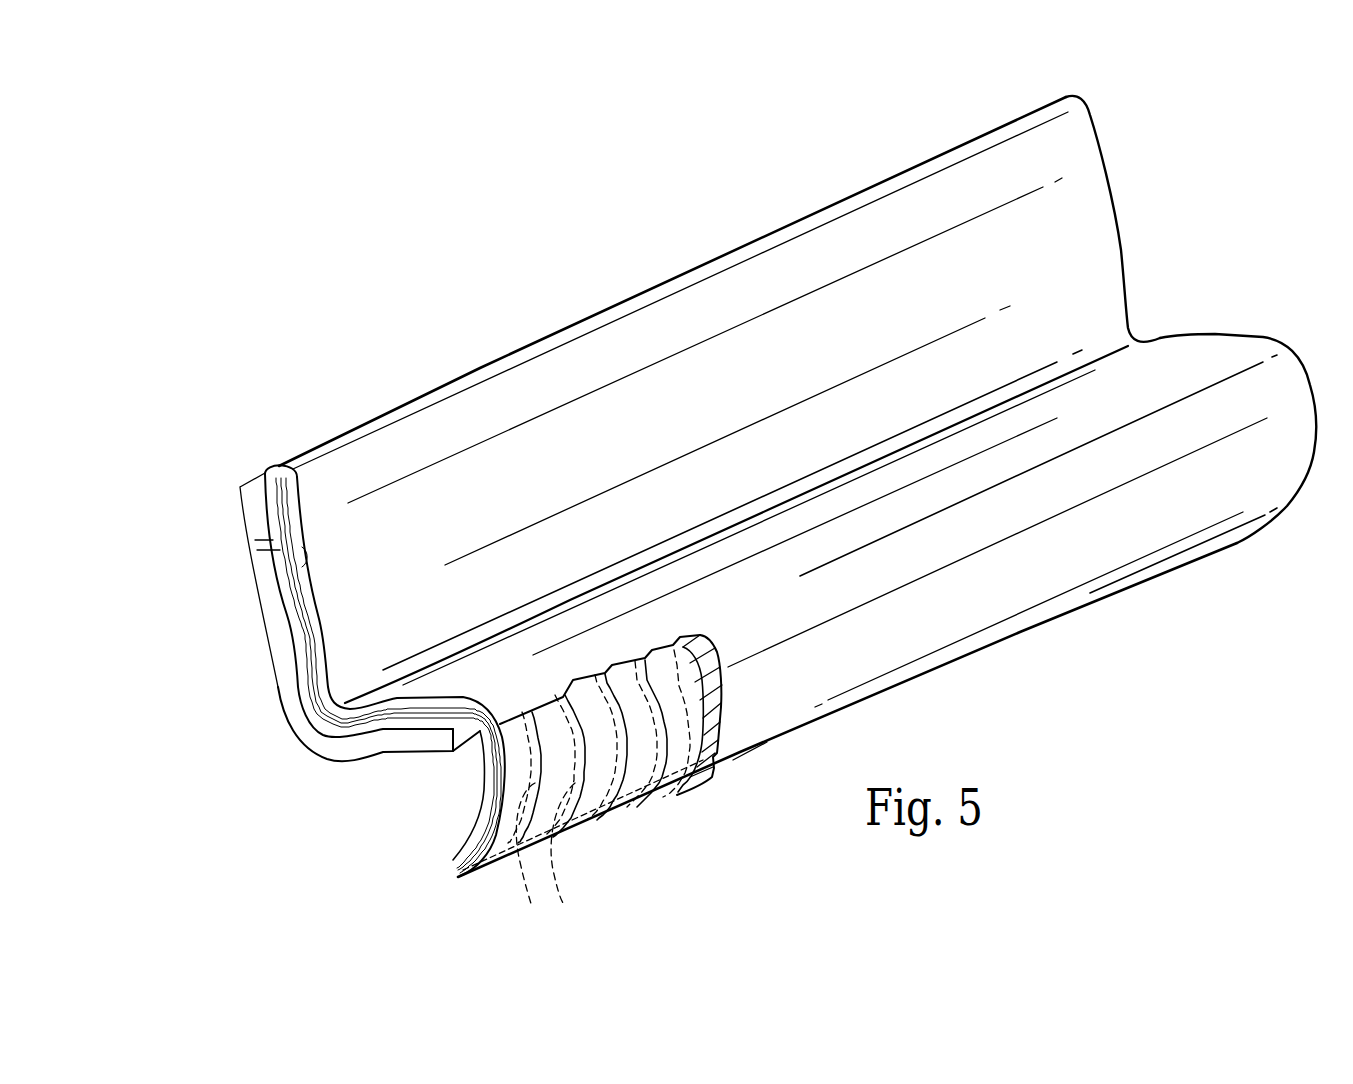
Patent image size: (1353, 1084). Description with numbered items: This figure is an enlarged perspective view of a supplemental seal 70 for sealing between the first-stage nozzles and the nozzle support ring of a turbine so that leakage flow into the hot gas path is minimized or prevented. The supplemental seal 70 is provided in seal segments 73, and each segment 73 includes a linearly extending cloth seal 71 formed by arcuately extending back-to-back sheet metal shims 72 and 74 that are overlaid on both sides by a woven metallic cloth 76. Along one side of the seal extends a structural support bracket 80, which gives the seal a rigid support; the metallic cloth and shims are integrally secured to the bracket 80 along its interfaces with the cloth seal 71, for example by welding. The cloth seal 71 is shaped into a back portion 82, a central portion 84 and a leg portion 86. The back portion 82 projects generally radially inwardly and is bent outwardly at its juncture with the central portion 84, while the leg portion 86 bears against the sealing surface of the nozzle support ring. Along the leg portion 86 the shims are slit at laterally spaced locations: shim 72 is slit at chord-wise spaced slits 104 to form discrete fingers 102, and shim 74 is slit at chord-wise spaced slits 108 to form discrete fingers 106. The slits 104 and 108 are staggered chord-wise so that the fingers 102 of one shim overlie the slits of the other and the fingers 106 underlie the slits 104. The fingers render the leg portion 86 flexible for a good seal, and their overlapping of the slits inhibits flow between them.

The supplemental seal 70 is at (397, 296).
The cloth seal 71 is at (320, 440).
The sheet metal shim 72 is at (303, 567).
The seal segment 73 is at (965, 145).
The sheet metal shim 74 is at (302, 618).
The woven metallic cloth 76 is at (617, 430).
The structural support bracket 80 is at (290, 700).
The back portion 82 is at (277, 510).
The central portion 84 is at (398, 702).
The leg portion 86 is at (875, 658).
The fingers 102 is at (563, 783).
The slits 104 is at (587, 753).
The fingers 106 is at (532, 907).
The slits 108 is at (565, 860).